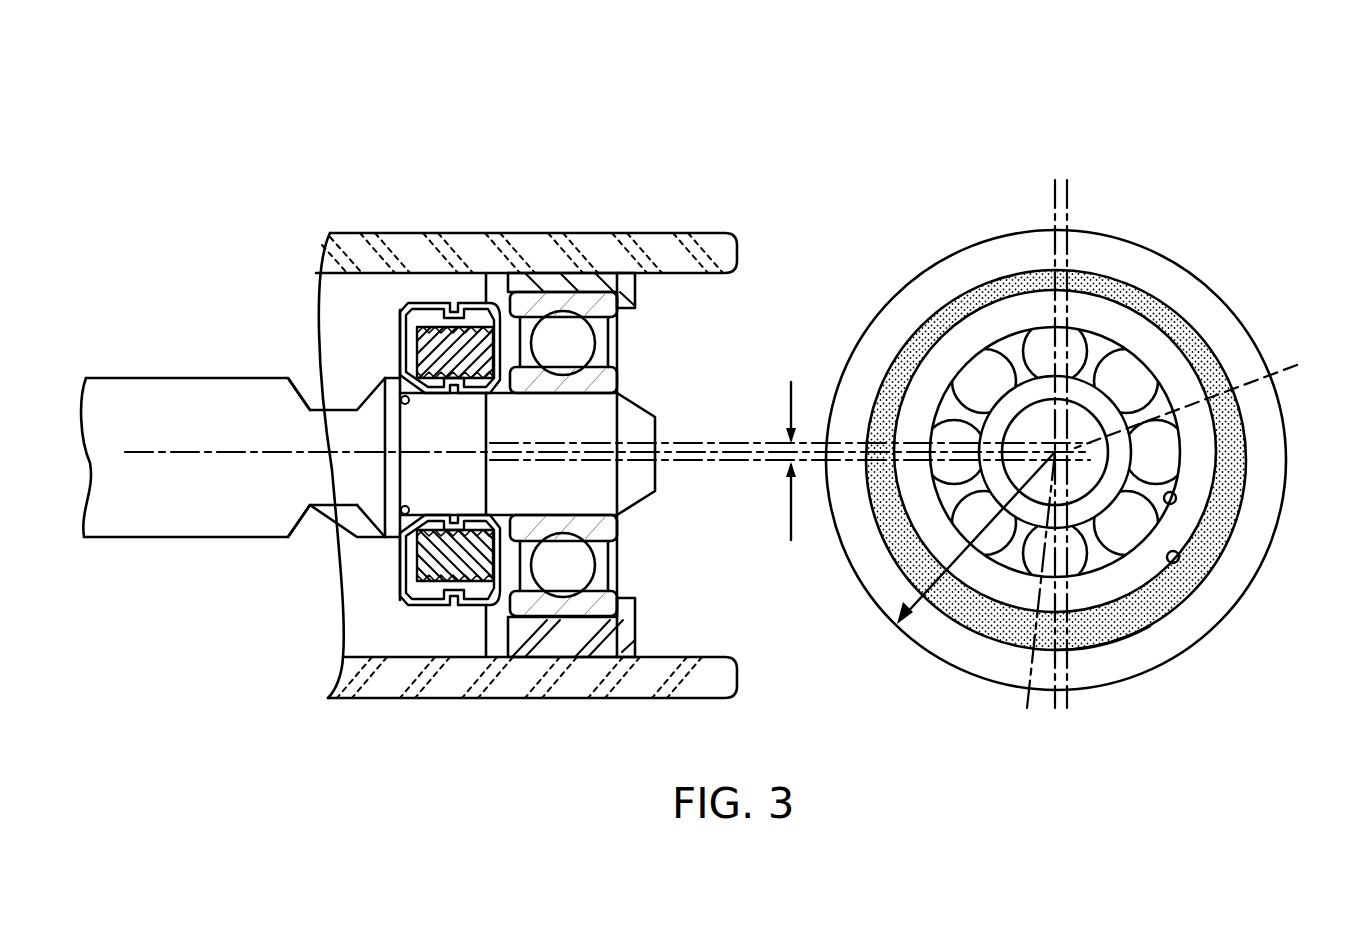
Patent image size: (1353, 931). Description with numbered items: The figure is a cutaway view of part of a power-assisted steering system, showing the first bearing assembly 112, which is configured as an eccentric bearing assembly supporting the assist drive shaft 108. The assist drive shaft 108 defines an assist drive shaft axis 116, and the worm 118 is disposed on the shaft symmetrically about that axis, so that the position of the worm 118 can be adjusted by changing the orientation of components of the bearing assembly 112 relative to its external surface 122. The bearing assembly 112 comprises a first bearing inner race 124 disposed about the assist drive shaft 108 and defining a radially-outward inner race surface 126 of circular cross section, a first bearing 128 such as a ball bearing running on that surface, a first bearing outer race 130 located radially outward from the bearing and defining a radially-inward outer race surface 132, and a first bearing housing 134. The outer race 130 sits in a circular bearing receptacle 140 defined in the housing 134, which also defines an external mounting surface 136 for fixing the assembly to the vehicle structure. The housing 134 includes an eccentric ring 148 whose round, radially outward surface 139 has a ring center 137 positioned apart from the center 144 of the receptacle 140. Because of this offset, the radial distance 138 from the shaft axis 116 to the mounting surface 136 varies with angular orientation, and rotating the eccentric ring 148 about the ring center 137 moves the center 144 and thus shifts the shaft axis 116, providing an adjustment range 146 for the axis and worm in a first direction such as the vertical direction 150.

The assist drive shaft 108 is at (112, 398).
The first bearing assembly 112 is at (485, 124).
The assist drive shaft axis 116 is at (226, 452).
The worm 118 is at (208, 378).
The external surface 122 is at (603, 275).
The first bearing inner race 124 is at (1078, 389).
The inner race surface 126 is at (1080, 389).
The first bearing 128 is at (1163, 453).
The first bearing outer race 130 is at (1143, 338).
The outer race surface 132 is at (1177, 565).
The first bearing housing 134 is at (1010, 643).
The external mounting surface 136 is at (1140, 673).
The ring center 137 is at (1033, 595).
The radial distance 138 is at (885, 608).
The radially outward surface 139 is at (1102, 643).
The circular bearing receptacle 140 is at (1178, 562).
The center 144 is at (1204, 399).
The adjustment range 146 is at (790, 420).
The eccentric ring 148 is at (900, 543).
The vertical direction 150 is at (790, 503).